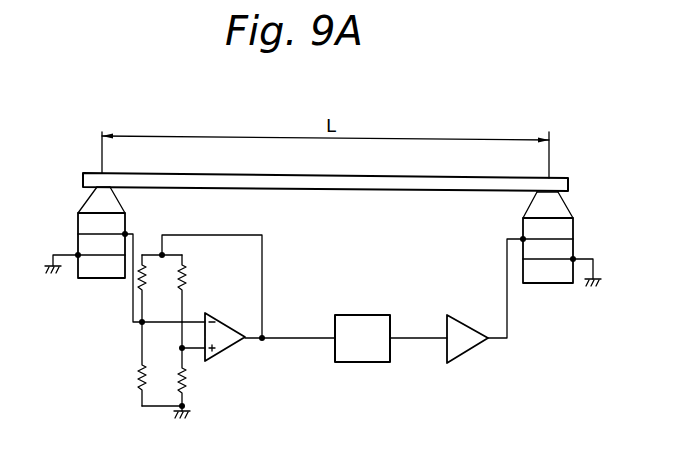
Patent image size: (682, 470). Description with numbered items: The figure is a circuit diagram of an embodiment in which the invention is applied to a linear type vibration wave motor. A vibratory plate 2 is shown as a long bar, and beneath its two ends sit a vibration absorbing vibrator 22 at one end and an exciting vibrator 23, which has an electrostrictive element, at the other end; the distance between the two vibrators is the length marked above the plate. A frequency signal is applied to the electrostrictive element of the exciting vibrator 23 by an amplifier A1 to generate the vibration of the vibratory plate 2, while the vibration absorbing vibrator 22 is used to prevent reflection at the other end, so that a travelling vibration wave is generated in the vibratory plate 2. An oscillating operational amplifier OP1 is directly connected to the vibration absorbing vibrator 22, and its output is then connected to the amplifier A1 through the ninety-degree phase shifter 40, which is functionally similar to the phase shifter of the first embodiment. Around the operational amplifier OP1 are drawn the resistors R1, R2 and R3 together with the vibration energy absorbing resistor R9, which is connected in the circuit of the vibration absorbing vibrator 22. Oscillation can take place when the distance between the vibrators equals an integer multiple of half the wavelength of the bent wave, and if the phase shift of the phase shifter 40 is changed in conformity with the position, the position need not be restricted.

The vibratory plate 2 is at (571, 185).
The vibration absorbing vibrator 22 is at (78, 228).
The exciting vibrator 23 is at (577, 232).
The resistor R1 is at (162, 287).
The resistor R2 is at (189, 281).
The resistor R3 is at (187, 383).
The vibration energy absorbing resistor R9 is at (133, 378).
The oscillating operational amplifier OP1 is at (225, 352).
The phase shifter 40 is at (368, 362).
The amplifier A1 is at (463, 352).